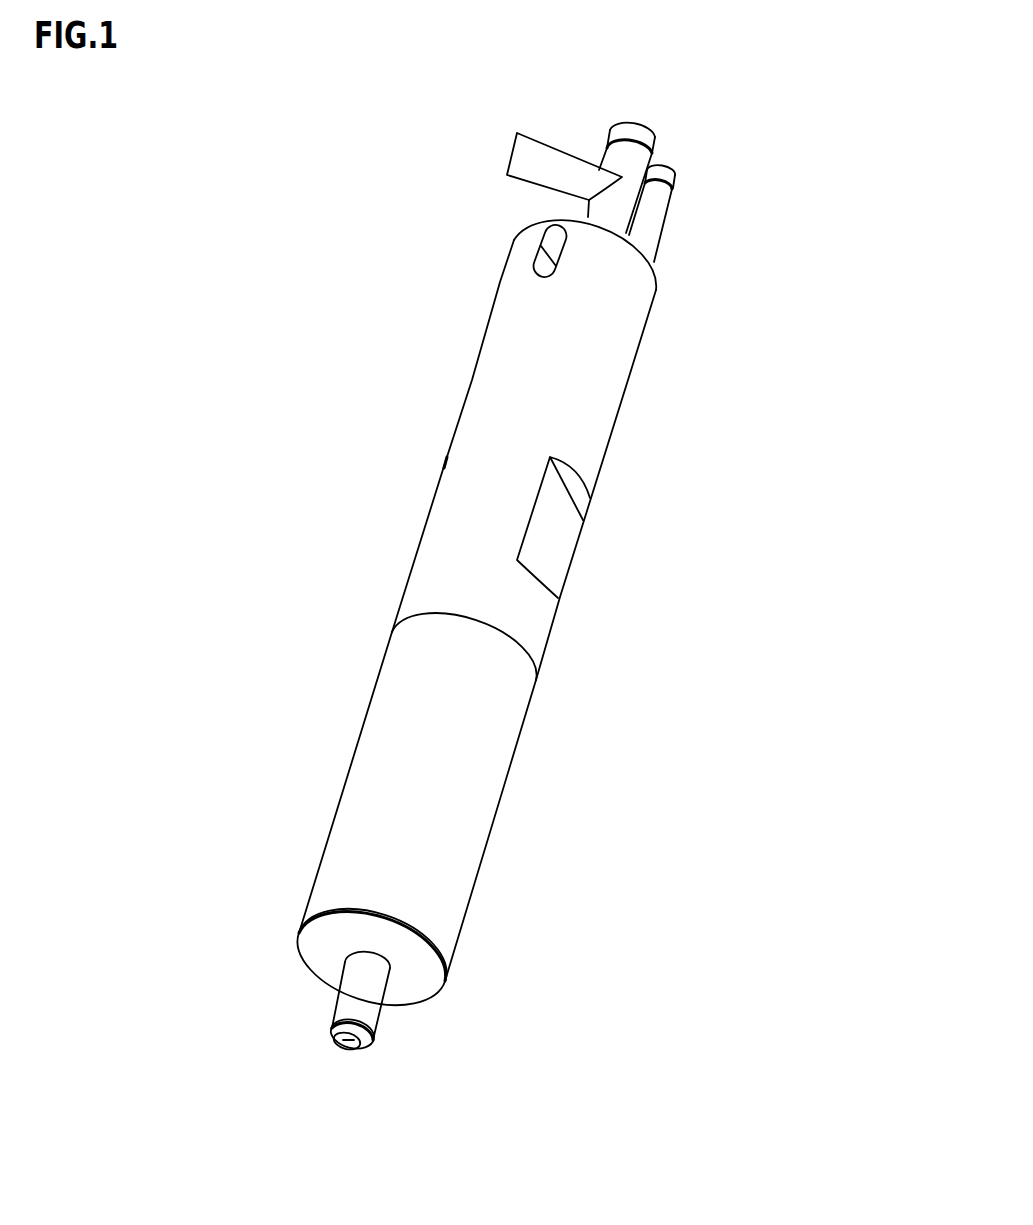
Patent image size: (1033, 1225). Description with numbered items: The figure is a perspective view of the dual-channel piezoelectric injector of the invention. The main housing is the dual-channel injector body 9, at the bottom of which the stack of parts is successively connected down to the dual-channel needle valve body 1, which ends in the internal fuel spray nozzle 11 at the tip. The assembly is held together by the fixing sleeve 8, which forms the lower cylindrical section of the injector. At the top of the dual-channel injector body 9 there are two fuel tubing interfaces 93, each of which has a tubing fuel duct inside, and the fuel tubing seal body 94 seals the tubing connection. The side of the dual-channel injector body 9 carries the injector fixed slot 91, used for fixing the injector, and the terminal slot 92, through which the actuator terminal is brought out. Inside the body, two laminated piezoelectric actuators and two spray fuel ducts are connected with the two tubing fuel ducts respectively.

The dual-channel needle valve body 1 is at (528, 1015).
The internal fuel spray nozzle 11 is at (527, 1074).
The fixing sleeve 8 is at (508, 818).
The dual-channel injector body 9 is at (567, 450).
The injector fixed slot 91 is at (630, 535).
The terminal slot 92 is at (431, 303).
The fuel tubing interface 93 is at (453, 182).
The fuel tubing seal body 94 is at (672, 140).